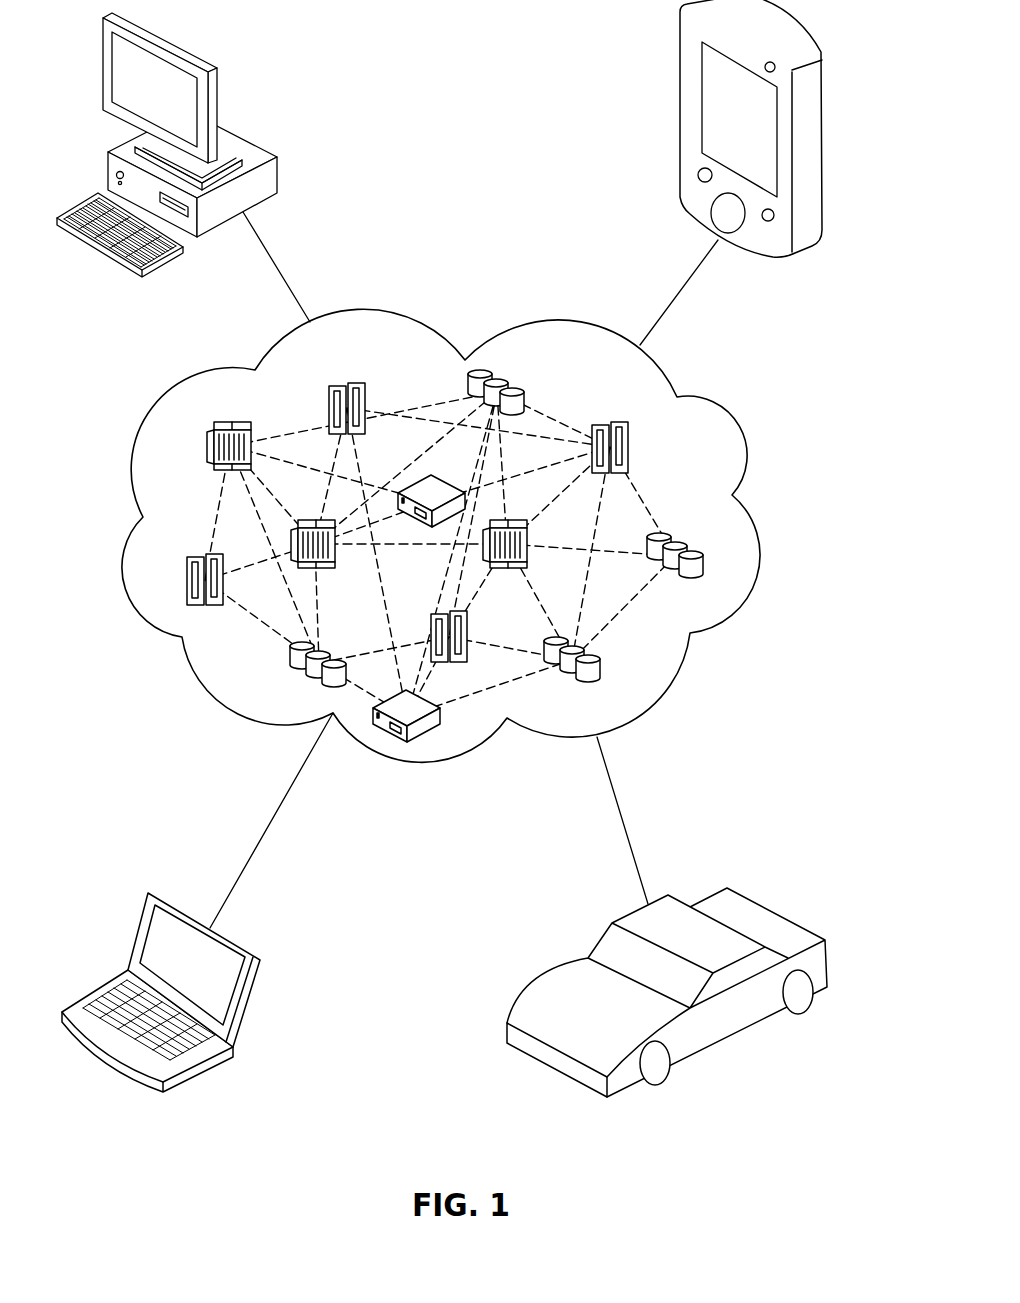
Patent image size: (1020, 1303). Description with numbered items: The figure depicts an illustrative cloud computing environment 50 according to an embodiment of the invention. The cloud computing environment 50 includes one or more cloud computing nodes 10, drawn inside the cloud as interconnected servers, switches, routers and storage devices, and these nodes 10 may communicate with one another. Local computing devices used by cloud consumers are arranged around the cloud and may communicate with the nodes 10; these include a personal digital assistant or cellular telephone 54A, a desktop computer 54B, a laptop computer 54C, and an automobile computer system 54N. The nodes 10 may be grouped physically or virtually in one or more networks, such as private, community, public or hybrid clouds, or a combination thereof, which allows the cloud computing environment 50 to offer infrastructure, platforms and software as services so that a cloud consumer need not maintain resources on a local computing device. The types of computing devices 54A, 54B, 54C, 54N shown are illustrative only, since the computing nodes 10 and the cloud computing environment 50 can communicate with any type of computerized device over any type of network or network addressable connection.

The cloud computing nodes 10 is at (682, 471).
The cloud computing environment 50 is at (734, 614).
The personal digital assistant or cellular telephone 54A is at (678, 70).
The desktop computer 54B is at (278, 173).
The laptop computer 54C is at (260, 960).
The automobile computer system 54N is at (828, 958).